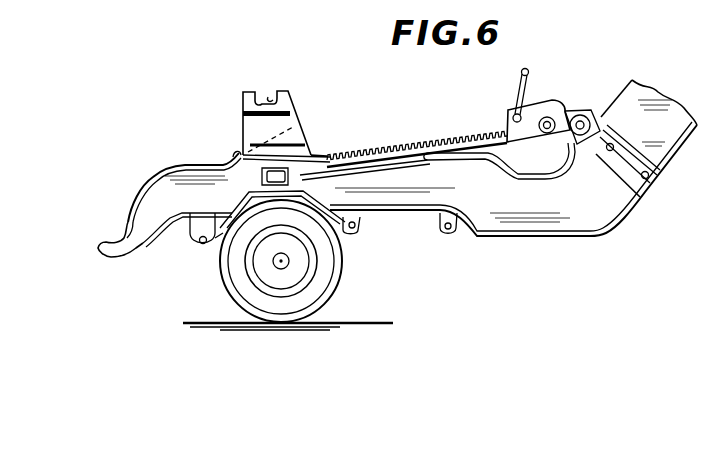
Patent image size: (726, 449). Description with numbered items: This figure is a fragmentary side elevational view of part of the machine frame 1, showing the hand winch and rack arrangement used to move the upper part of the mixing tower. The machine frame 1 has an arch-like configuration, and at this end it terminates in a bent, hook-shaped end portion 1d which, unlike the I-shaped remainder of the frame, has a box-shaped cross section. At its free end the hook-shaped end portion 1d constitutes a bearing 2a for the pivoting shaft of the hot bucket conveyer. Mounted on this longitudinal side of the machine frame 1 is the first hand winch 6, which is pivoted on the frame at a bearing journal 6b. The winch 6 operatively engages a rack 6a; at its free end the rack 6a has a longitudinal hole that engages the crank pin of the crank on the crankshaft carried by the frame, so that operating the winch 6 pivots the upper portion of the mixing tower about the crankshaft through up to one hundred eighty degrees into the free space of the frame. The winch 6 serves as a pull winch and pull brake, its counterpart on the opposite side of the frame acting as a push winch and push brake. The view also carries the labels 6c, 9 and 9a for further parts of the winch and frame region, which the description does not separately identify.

The machine frame 1 is at (680, 136).
The hook-shaped end portion 1d is at (158, 218).
The bearing 2a is at (123, 231).
The first hand winch 6 is at (540, 110).
The rack 6a is at (584, 114).
The bearing journal 6b is at (435, 146).
The curl 6c is at (236, 157).
The bracket 9 is at (298, 128).
The notch 9a is at (277, 101).